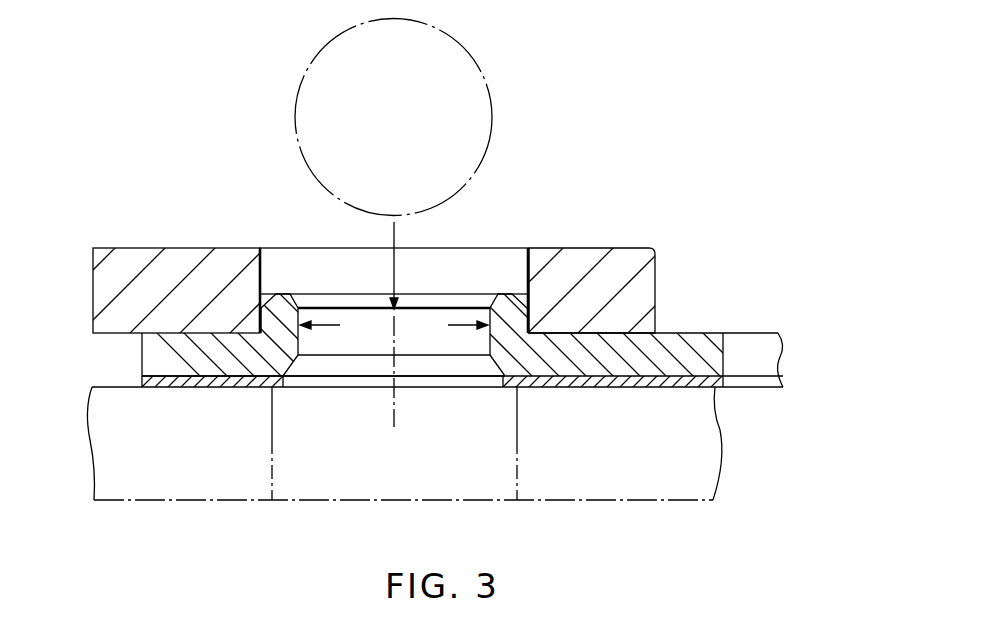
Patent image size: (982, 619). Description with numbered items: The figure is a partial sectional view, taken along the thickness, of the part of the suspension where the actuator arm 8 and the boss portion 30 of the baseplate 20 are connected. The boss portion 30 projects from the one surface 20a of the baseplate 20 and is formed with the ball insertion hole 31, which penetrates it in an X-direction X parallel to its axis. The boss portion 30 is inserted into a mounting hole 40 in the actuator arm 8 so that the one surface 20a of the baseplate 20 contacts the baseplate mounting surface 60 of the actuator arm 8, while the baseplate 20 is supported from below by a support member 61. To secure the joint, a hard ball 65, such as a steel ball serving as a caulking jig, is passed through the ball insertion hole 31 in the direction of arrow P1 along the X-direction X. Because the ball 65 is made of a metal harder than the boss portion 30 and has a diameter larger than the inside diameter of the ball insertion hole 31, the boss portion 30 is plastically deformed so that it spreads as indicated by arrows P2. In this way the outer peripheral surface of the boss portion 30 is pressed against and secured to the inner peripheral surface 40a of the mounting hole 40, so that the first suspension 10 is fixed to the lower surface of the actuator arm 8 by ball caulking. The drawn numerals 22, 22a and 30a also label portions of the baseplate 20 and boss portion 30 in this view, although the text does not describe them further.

The actuator arm 8 is at (137, 270).
The first suspension 10 is at (526, 317).
The baseplate 20 is at (687, 340).
The one surface of the baseplate 20a is at (580, 335).
The thin plate portion 22 is at (667, 377).
The thin plate portion 22a is at (208, 388).
The boss portion 30 is at (288, 293).
The side face of first member 30a is at (260, 323).
The ball insertion hole 31 is at (350, 358).
The mounting hole 40 is at (456, 263).
The inner peripheral surface of the mounting hole 40a is at (262, 249).
The baseplate mounting surface 60 is at (550, 360).
The support member 61 is at (538, 503).
The ball 65 is at (485, 83).
The arrow P1 is at (396, 273).
The arrow P2 is at (327, 323).
The X-direction X is at (395, 411).